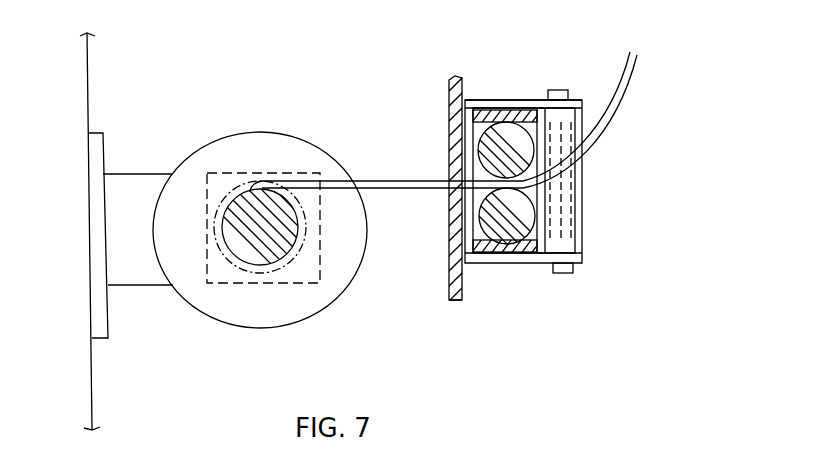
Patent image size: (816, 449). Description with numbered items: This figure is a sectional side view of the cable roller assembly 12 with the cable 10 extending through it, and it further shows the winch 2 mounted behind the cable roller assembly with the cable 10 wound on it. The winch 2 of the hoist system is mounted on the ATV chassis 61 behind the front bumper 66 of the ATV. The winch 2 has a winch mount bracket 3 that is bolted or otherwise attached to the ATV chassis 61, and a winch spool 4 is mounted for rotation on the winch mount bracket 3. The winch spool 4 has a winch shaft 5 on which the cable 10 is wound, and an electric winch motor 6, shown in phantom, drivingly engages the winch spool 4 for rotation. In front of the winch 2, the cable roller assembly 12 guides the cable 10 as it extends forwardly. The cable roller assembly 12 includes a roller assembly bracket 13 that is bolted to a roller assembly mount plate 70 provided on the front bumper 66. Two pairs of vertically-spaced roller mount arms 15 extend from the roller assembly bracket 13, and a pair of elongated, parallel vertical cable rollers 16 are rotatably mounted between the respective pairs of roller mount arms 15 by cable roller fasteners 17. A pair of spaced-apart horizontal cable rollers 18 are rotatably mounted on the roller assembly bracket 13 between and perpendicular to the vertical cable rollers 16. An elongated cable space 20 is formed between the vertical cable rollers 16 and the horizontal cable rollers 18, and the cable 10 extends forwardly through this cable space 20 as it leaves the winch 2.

The winch 2 is at (302, 117).
The winch mount bracket 3 is at (138, 180).
The winch spool 4 is at (335, 273).
The winch shaft 5 is at (283, 225).
The winch motor 6 is at (255, 170).
The cable 10 is at (405, 179).
The cable roller assembly 12 is at (493, 100).
The roller assembly bracket 13 is at (510, 113).
The roller mount arms 15 is at (478, 118).
The vertical cable rollers 16 is at (568, 203).
The cable roller fasteners 17 is at (560, 90).
The horizontal cable rollers 18 is at (505, 150).
The cable space 20 is at (527, 190).
The ATV chassis 61 is at (88, 58).
The front bumper 66 is at (450, 293).
The roller assembly mount plate 70 is at (448, 98).